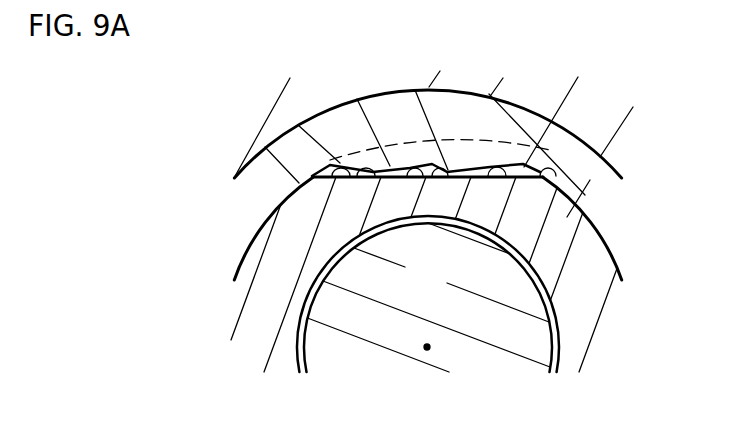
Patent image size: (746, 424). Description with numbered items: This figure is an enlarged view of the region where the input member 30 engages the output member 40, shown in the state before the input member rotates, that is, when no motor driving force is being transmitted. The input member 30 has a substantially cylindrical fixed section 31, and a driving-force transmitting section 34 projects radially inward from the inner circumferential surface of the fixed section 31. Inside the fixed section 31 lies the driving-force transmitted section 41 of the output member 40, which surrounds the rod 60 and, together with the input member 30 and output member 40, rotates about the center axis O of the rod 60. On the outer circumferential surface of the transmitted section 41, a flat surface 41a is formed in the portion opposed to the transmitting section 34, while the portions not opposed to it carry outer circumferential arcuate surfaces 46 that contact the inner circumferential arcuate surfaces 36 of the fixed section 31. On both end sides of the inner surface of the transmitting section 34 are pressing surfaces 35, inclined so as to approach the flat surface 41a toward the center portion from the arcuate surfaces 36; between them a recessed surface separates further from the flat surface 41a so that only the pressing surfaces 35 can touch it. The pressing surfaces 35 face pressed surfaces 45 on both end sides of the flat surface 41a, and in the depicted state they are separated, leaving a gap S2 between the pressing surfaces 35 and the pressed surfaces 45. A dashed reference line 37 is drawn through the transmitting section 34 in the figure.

The input member 30 is at (420, 131).
The fixed section 31 is at (320, 130).
The driving-force transmitting section 34 is at (350, 94).
The pressing surface 35 is at (324, 169).
The virtual line 37 is at (429, 167).
The gap S2 is at (316, 158).
The pressed surface 45 is at (318, 193).
The outer circumferential arcuate surface 46 is at (258, 232).
The inner circumferential arcuate surface 36 is at (236, 262).
The output member 40 is at (483, 274).
The driving-force transmitted section 41 is at (578, 204).
The flat surface 41a is at (408, 179).
The rod 60 is at (443, 275).
The center axis O is at (425, 346).